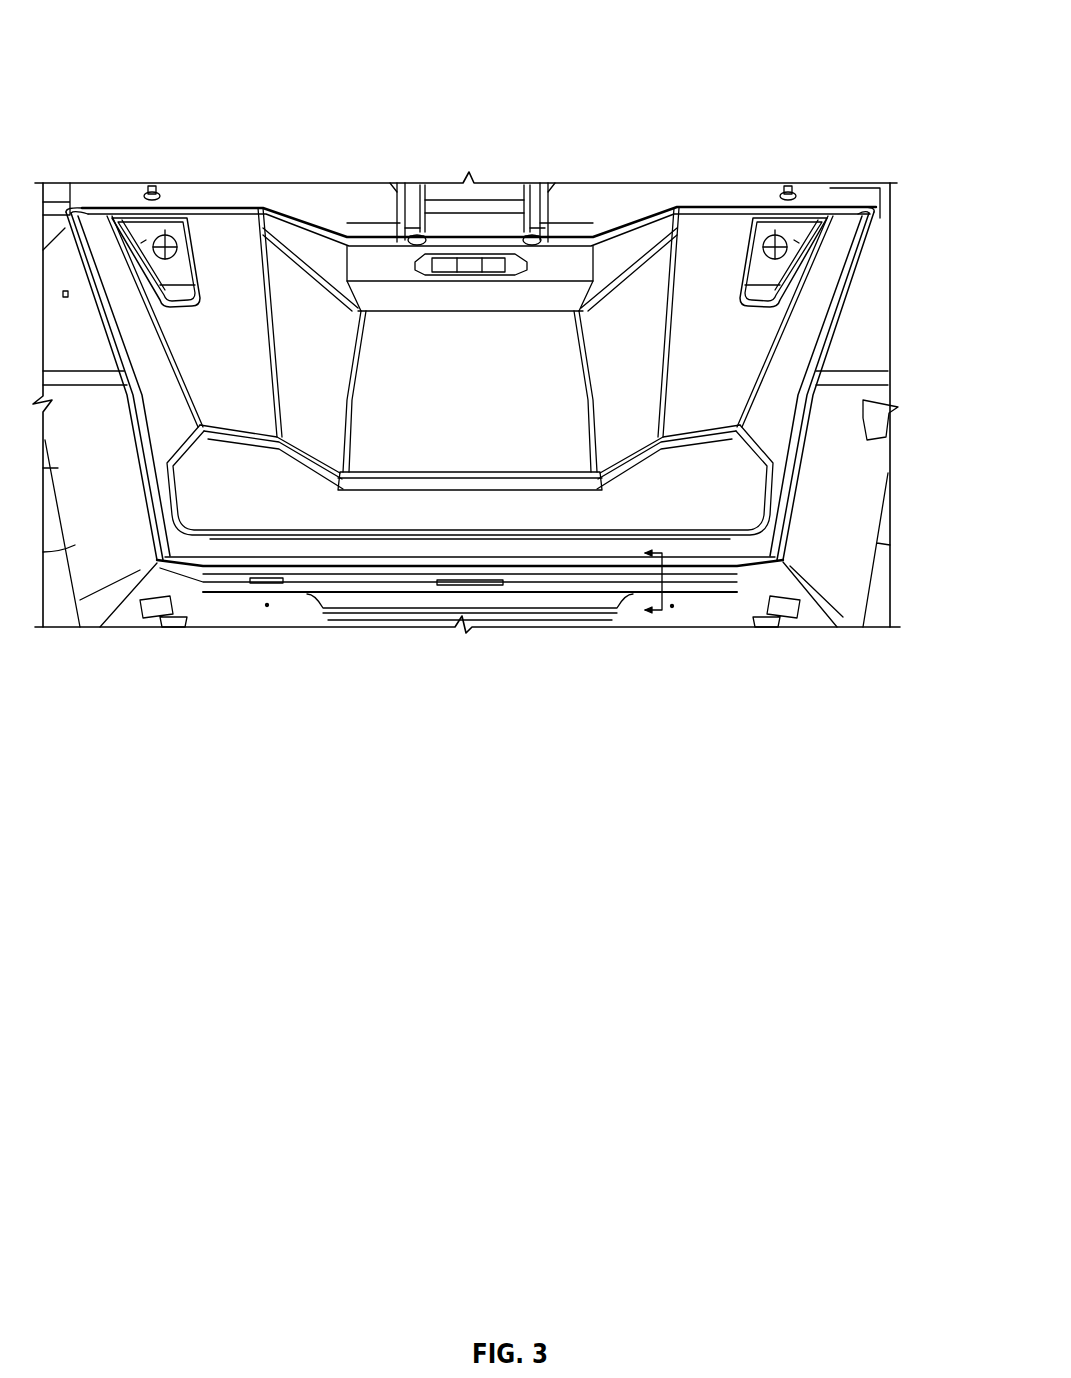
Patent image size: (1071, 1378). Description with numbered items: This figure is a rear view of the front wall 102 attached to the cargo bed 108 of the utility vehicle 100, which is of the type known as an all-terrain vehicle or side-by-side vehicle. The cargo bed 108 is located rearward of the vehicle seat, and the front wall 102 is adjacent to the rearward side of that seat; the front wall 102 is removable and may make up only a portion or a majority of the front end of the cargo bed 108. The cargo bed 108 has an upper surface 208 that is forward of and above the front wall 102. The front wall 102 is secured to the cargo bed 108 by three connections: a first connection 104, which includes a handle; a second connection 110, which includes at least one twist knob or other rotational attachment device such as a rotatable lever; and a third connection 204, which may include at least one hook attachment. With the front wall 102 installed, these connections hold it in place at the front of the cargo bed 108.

The utility vehicle 100 is at (857, 92).
The front wall 102 is at (265, 513).
The first connection 104 is at (463, 250).
The cargo bed 108 is at (856, 339).
The second connection 110 is at (770, 243).
The third connection 204 is at (280, 577).
The upper surface 208 is at (733, 198).